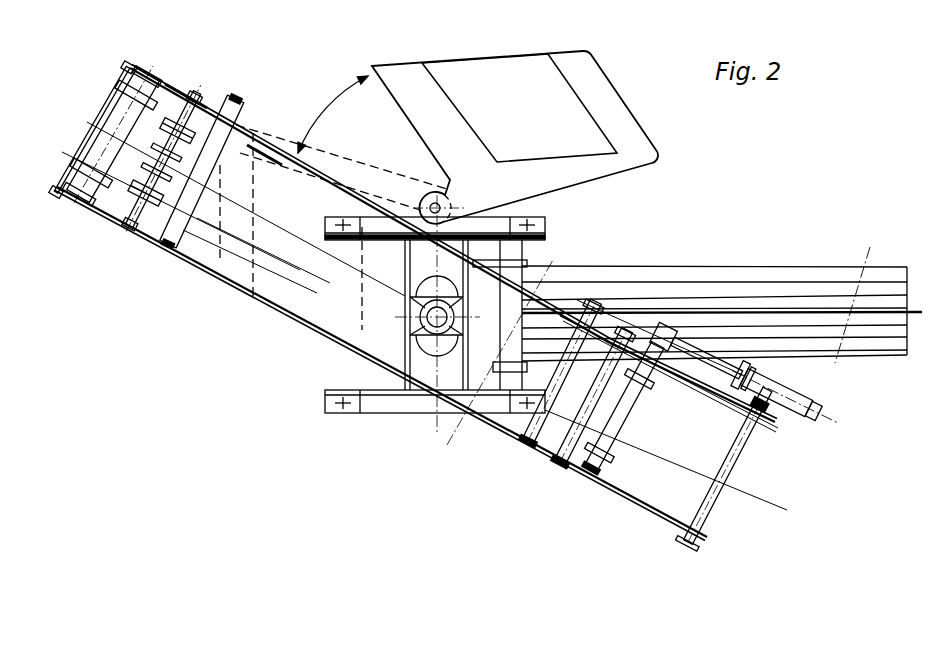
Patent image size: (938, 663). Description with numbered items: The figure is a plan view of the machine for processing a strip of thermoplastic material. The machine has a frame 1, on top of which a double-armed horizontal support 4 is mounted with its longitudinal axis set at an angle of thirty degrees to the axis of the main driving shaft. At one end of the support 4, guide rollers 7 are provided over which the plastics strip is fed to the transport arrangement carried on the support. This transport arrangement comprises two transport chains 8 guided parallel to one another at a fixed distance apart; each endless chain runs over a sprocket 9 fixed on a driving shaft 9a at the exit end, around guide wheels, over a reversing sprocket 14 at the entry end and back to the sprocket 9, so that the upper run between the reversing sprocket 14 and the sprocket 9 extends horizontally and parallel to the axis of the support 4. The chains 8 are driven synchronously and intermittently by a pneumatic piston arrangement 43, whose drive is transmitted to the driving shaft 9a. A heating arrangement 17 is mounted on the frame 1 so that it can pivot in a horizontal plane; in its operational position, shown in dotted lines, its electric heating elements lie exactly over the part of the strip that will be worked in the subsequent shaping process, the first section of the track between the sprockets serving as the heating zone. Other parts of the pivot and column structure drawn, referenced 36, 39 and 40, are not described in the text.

The frame 1 is at (372, 405).
The double-armed horizontal support 4 is at (278, 293).
The guide rollers 7 is at (98, 150).
The transport chains 8 is at (205, 237).
The sprocket 9 is at (600, 452).
The driving shaft 9a is at (632, 403).
The reversing sprocket 14 is at (150, 212).
The heating arrangement 17 is at (612, 110).
The column 36 is at (407, 357).
The pivot bearing 39 is at (454, 315).
The lower bearing shell 40 is at (430, 353).
The pneumatic piston arrangement 43 is at (787, 395).